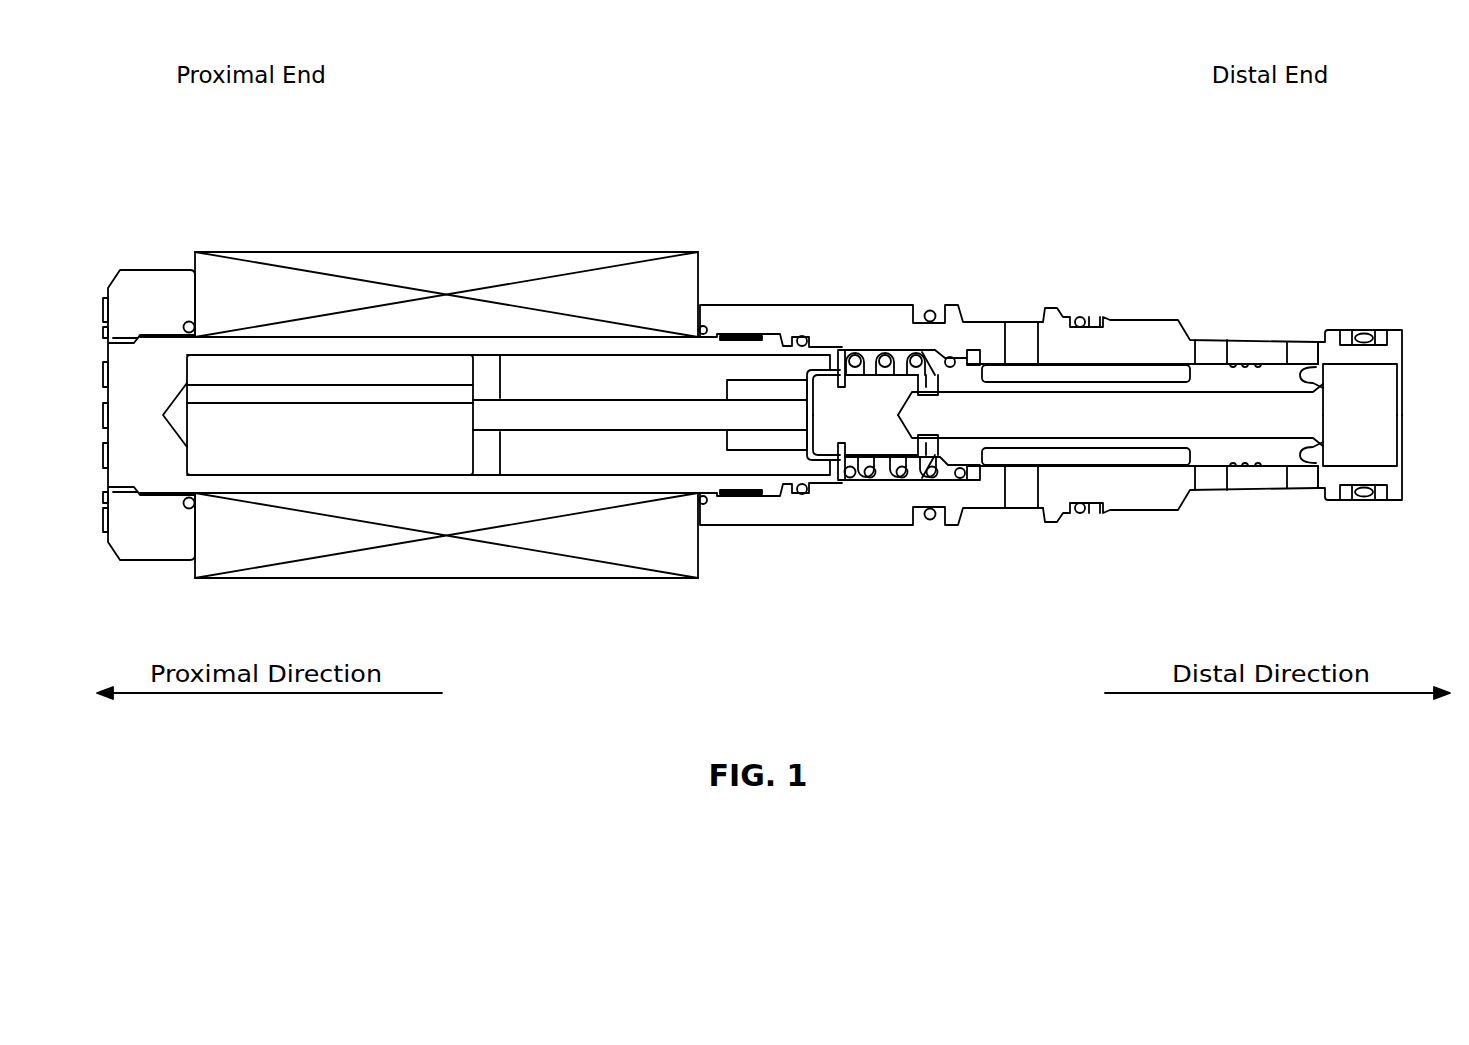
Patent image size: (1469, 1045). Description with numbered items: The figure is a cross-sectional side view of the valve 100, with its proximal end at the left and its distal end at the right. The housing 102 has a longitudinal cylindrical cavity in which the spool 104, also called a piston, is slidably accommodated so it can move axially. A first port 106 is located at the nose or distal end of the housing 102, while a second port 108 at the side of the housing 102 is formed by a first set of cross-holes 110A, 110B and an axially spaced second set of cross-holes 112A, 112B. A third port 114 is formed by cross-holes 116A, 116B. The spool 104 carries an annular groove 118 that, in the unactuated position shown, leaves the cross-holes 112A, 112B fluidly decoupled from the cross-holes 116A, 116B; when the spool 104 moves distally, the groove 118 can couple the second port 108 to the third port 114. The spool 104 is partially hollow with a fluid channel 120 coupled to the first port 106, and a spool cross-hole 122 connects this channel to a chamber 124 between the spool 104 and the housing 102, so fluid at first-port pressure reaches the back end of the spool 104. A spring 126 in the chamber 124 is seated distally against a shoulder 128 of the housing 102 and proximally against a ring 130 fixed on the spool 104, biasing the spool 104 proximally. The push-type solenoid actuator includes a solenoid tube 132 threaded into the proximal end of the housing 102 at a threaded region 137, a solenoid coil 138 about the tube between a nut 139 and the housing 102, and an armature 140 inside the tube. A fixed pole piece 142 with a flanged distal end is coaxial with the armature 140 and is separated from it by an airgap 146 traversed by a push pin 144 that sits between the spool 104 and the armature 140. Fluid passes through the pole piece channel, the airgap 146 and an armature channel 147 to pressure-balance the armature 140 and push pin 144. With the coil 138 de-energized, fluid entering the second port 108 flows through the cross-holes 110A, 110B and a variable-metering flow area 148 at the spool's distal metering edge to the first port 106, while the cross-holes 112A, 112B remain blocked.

The valve 100 is at (172, 170).
The housing 102 is at (785, 305).
The spool 104 is at (1257, 455).
The first port 106 is at (1412, 434).
The second port 108 is at (1253, 312).
The cross-hole 110A is at (1305, 352).
The cross-hole 110B is at (1298, 480).
The cross-hole 112A is at (1217, 352).
The cross-hole 112B is at (1207, 480).
The third port 114 is at (1006, 300).
The cross-hole 116A is at (1020, 338).
The cross-hole 116B is at (1017, 498).
The annular groove 118 is at (1131, 360).
The fluid channel 120 is at (1077, 428).
The spool cross-hole 122 is at (920, 360).
The chamber 124 is at (888, 478).
The spring 126 is at (885, 356).
The shoulder 128 is at (980, 350).
The ring 130 is at (840, 378).
The solenoid tube 132 is at (750, 350).
The threaded region 137 is at (741, 502).
The solenoid coil 138 is at (428, 250).
The nut 139 is at (133, 268).
The armature 140 is at (352, 458).
The pole piece 142 is at (577, 455).
The push pin 144 is at (650, 410).
The airgap 146 is at (489, 462).
The armature channel 147 is at (297, 380).
The flow area 148 is at (1325, 374).